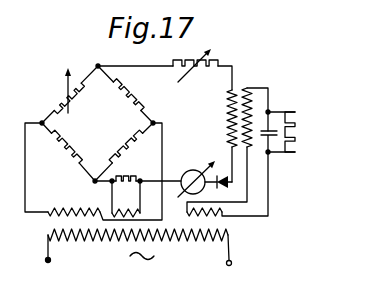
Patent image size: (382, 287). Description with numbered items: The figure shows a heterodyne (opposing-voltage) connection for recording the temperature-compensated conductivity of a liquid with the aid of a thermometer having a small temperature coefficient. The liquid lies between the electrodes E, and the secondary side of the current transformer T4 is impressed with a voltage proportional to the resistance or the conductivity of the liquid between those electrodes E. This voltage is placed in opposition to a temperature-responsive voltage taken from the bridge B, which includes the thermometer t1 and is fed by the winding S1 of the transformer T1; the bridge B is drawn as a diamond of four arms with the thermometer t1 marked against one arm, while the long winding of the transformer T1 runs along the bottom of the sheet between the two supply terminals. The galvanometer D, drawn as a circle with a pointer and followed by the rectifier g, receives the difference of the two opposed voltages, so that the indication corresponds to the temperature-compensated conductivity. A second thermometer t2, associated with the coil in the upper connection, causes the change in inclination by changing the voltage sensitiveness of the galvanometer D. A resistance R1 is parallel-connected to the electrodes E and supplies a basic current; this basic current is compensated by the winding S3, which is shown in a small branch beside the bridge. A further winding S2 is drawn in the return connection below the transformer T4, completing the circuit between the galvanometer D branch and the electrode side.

The bridge B is at (97, 123).
The thermometer t1 is at (58, 90).
The thermometer t2 is at (165, 65).
The current transformer T4 is at (231, 113).
The electrodes E is at (272, 126).
The resistance R1 is at (281, 145).
The galvanometer D is at (176, 174).
The rectifier g is at (223, 174).
The winding S1 is at (77, 194).
The winding S3 is at (118, 196).
The resistance S2 is at (219, 217).
The transformer T1 is at (60, 226).